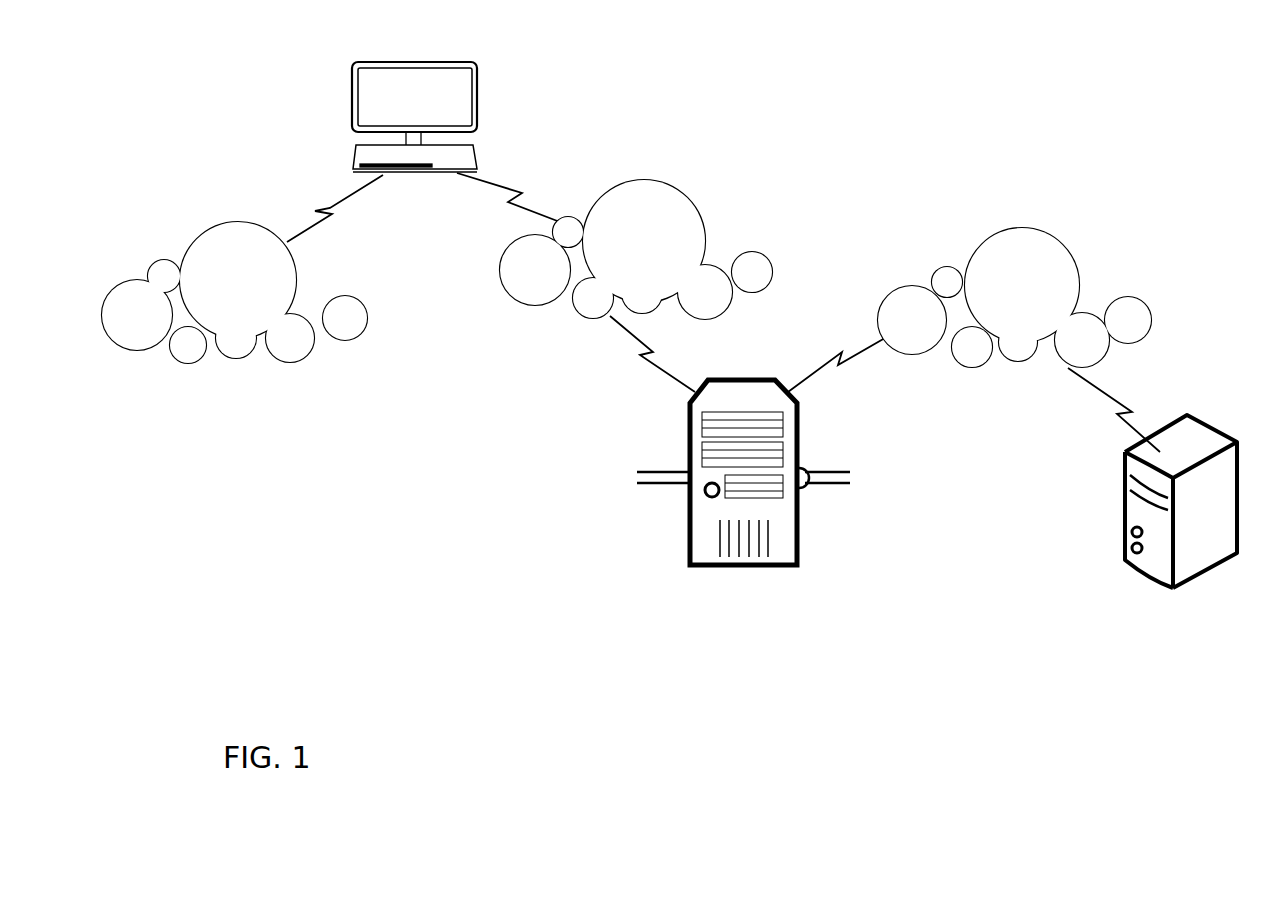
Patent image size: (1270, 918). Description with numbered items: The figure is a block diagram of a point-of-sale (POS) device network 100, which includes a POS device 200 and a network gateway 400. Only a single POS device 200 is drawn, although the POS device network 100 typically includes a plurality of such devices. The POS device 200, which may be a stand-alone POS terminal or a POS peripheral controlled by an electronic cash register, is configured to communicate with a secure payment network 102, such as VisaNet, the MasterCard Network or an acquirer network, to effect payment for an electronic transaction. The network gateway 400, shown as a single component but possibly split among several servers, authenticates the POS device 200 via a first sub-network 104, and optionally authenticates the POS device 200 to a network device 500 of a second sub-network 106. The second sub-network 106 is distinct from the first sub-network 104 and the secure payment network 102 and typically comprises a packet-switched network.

The point-of-sale device network 100 is at (687, 732).
The secure payment network 102 is at (247, 311).
The first sub-network 104 is at (603, 263).
The second sub-network 106 is at (1021, 290).
The POS device 200 is at (454, 95).
The network gateway 400 is at (729, 478).
The network device 500 is at (1138, 502).